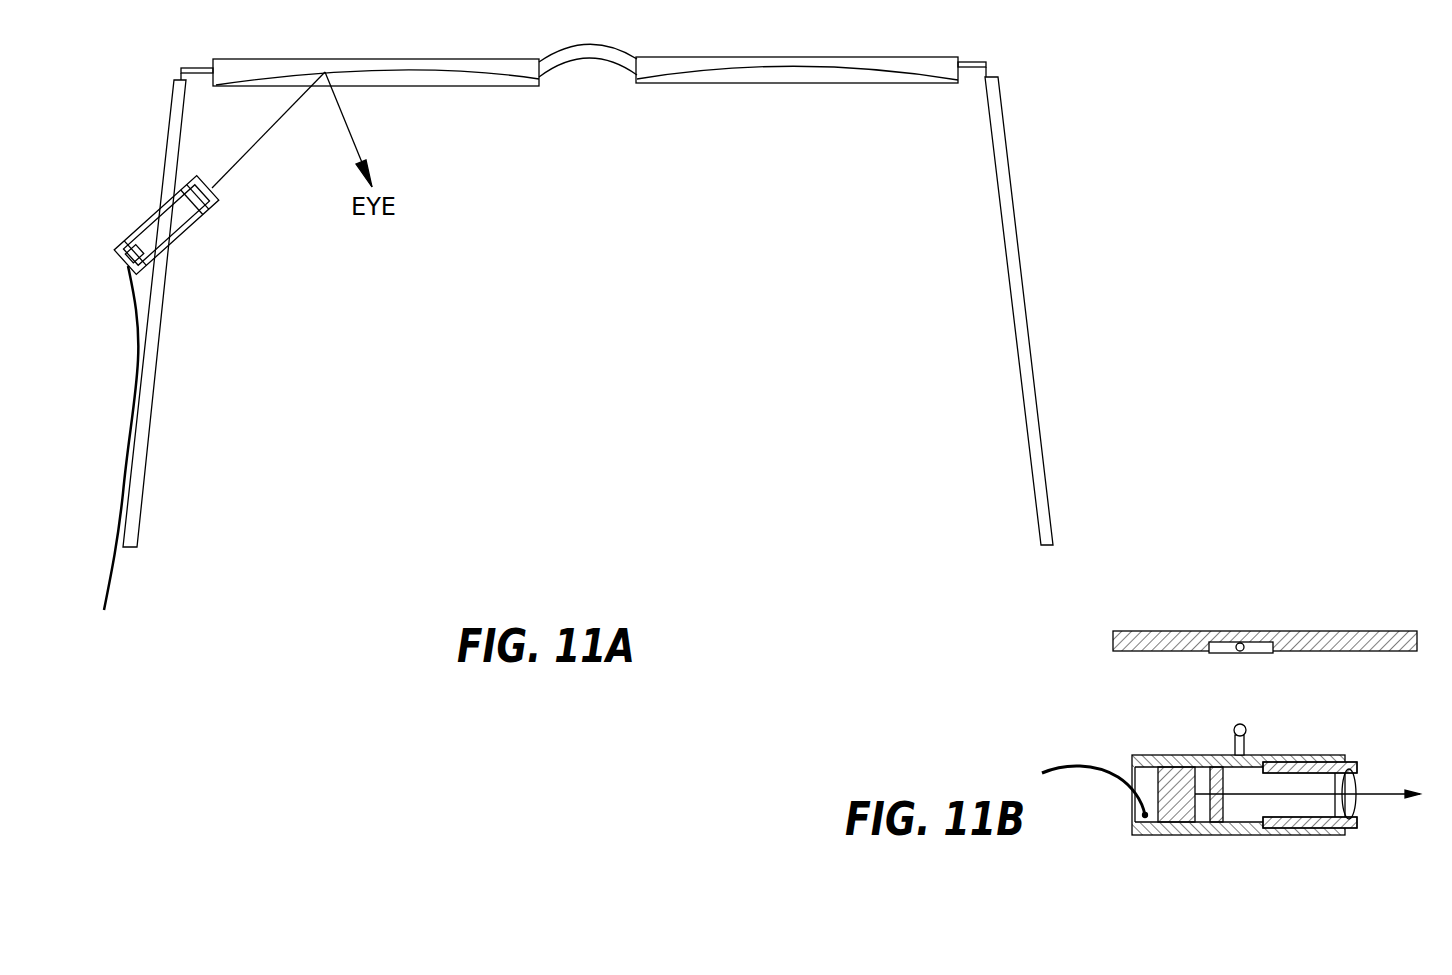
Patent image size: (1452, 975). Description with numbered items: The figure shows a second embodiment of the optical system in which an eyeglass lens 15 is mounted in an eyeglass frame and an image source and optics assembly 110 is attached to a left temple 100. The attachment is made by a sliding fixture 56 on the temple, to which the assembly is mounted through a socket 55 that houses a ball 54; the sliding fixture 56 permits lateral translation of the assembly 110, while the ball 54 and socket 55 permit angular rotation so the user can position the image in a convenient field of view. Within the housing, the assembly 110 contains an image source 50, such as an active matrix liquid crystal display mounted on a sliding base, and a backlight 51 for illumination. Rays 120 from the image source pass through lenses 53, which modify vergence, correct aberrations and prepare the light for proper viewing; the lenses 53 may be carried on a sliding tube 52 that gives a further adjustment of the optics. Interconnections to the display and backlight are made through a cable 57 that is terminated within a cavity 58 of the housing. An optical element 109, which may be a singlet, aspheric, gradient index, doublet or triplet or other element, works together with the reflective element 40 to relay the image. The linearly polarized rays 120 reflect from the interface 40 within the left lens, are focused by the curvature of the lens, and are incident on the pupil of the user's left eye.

In FIG. 11A, the eyeglass lens 15 is at (282, 59).
In FIG. 11A, the reflective element 40 is at (363, 68).
In FIG. 11A, the left temple 100 is at (150, 423).
In FIG. 11B, the left temple 100 is at (1335, 630).
In FIG. 11A, the image source and optics assembly 110 is at (190, 233).
In FIG. 11A, the optical element 109 is at (143, 247).
In FIG. 11A, the rays 120 is at (352, 132).
In FIG. 11B, the rays 120 is at (1383, 792).
In FIG. 11A, the cable 57 is at (117, 578).
In FIG. 11B, the cable 57 is at (1069, 764).
In FIG. 11B, the cavity 58 is at (1140, 783).
In FIG. 11B, the backlight 51 is at (1177, 787).
In FIG. 11B, the image source 50 is at (1220, 773).
In FIG. 11B, the ball 54 is at (1246, 727).
In FIG. 11B, the sliding tube 52 is at (1350, 830).
In FIG. 11B, the lenses 53 is at (1357, 782).
In FIG. 11B, the socket 55 is at (1240, 653).
In FIG. 11B, the sliding fixture 56 is at (1220, 653).